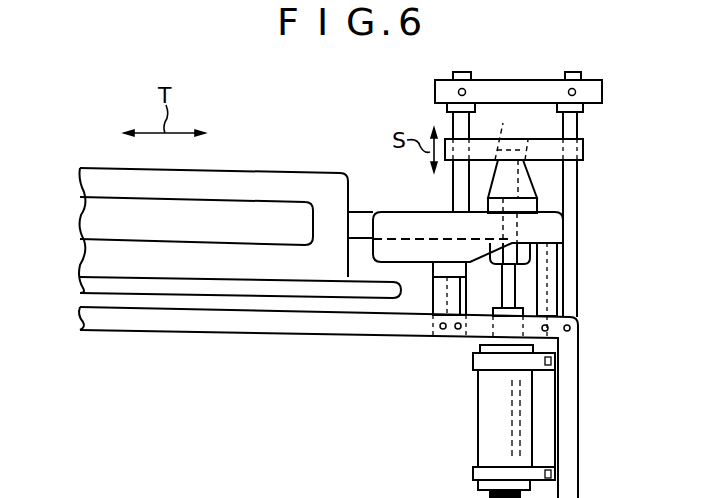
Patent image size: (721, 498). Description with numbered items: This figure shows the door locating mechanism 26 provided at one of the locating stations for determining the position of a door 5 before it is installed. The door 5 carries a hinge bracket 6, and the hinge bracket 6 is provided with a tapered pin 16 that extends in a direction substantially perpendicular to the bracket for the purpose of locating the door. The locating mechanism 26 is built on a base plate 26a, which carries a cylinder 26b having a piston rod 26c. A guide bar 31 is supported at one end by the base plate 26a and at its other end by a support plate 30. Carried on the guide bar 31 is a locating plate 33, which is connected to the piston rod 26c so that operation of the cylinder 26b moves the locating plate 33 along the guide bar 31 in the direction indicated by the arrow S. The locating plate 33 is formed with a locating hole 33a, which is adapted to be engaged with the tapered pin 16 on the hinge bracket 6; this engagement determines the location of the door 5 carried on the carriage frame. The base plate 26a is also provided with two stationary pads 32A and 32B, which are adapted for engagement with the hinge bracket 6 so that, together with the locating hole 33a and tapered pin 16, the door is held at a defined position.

The door 5 is at (258, 173).
The hinge bracket 6 is at (392, 222).
The tapered pin 16 is at (533, 186).
The door locating mechanism 26 is at (587, 221).
The base plate 26a is at (341, 327).
The cylinder 26b is at (493, 407).
The piston rod 26c is at (515, 293).
The support plate 30 is at (521, 88).
The guide bar 31 is at (437, 110).
The stationary pad 32A is at (440, 292).
The stationary pad 32B is at (550, 272).
The locating plate 33 is at (583, 152).
The locating hole 33a is at (501, 132).